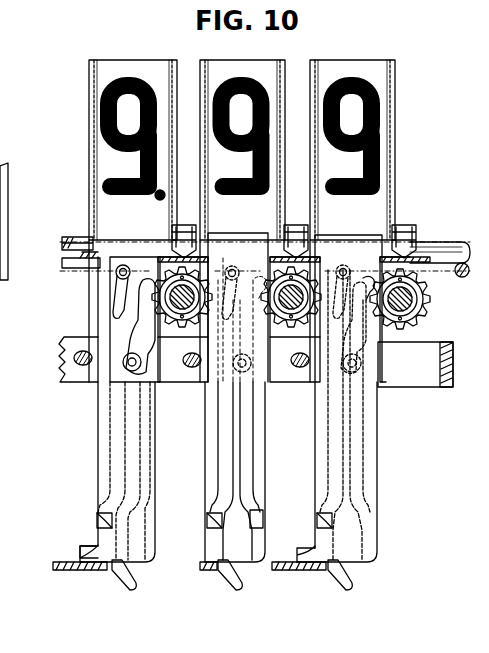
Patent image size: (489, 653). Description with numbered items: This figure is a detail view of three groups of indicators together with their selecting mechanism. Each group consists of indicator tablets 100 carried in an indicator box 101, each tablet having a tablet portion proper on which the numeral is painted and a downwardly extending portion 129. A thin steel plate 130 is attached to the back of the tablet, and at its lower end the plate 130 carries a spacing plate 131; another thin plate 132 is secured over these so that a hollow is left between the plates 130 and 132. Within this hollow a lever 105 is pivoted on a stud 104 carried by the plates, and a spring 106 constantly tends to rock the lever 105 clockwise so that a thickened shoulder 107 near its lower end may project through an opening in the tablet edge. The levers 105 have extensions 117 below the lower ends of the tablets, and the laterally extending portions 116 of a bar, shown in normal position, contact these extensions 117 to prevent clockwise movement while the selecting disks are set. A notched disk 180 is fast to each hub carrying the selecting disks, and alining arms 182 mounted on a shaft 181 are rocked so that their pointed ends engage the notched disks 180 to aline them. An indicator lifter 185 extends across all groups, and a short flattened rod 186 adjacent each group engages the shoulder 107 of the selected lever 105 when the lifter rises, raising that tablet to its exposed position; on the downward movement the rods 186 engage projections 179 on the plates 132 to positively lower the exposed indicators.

The indicator tablets 100 is at (165, 60).
The indicator box 101 is at (11, 209).
The stud 104 is at (137, 368).
The lever 105 is at (130, 350).
The spring 106 is at (112, 289).
The shoulder 107 is at (206, 530).
The laterally extending portions 116 is at (62, 572).
The extensions 117 is at (134, 583).
The downwardly extending portion 129 is at (100, 425).
The thin steel plate 130 is at (208, 505).
The spacing plate 131 is at (263, 518).
The thin plate 132 is at (378, 519).
The projections 179 is at (82, 553).
The notched disk 180 is at (422, 318).
The shaft 181 is at (440, 251).
The alining arms 182 is at (403, 226).
The indicator lifter 185 is at (405, 387).
The flattened rod 186 is at (302, 367).